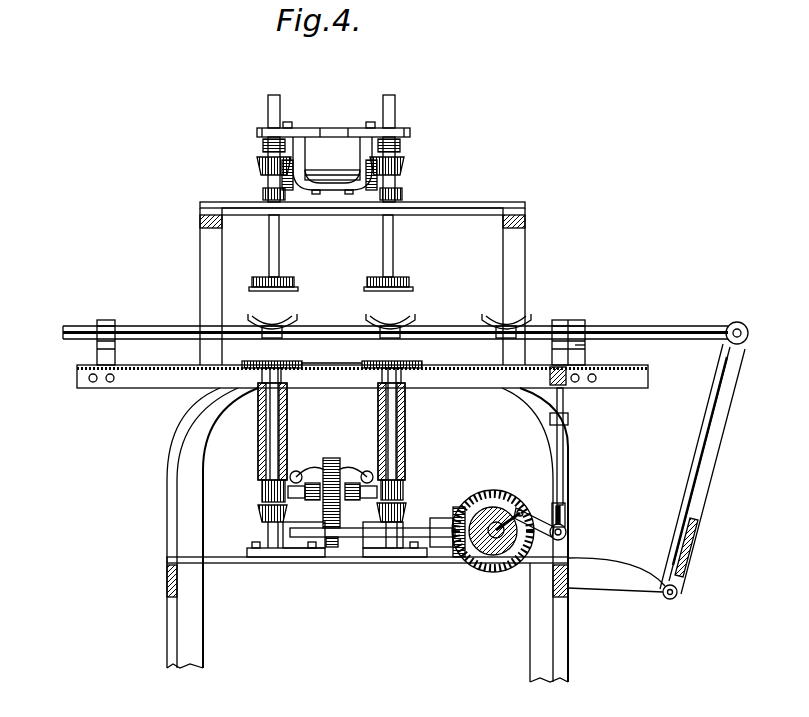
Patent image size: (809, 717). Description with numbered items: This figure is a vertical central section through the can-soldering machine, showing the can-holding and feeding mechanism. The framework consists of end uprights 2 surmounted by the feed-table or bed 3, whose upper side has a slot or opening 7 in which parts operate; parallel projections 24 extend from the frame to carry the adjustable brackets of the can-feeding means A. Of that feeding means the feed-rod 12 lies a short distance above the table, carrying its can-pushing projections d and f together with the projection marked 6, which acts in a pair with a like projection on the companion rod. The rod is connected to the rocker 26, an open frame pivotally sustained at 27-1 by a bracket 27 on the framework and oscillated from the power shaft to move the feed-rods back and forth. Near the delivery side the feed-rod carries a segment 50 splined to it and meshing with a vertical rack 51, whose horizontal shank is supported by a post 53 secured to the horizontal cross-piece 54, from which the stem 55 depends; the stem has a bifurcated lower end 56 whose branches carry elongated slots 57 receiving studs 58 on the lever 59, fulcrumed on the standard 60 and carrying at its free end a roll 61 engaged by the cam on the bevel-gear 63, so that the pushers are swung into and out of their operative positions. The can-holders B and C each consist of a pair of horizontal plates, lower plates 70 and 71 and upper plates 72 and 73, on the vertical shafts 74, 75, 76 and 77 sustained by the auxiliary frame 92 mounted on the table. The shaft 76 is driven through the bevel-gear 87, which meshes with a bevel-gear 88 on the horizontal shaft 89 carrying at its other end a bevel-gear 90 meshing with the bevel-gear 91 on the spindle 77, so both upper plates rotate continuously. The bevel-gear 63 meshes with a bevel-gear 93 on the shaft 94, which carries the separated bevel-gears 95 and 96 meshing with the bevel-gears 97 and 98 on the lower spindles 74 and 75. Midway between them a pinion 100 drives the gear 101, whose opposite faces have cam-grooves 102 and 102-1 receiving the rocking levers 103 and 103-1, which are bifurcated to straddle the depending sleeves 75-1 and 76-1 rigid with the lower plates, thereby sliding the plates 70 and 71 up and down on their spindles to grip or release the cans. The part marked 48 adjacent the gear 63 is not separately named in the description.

The uprights 2 is at (558, 643).
The feed-table 3 is at (175, 386).
The cup 6 is at (262, 318).
The slot or opening 7 is at (455, 380).
The feed-rod 12 is at (637, 325).
The projections 24 is at (93, 383).
The rocker 26 is at (718, 447).
The bracket 27 is at (616, 582).
The pivot 27-1 is at (675, 600).
The eccentric 48 is at (488, 548).
The segments 50 is at (565, 320).
The racks 51 is at (585, 353).
The posts 53 is at (550, 417).
The horizontal cross-piece 54 is at (546, 428).
The stem 55 is at (565, 460).
The bifurcated lower end 56 is at (567, 527).
The elongated slots 57 is at (567, 532).
The studs 58 is at (566, 540).
The lever 59 is at (560, 496).
The standard 60 is at (512, 555).
The roll 61 is at (498, 503).
The bevel-gear 63 is at (488, 492).
The lower plate 70 is at (262, 361).
The lower plate 71 is at (375, 361).
The upper plate 72 is at (282, 291).
The upper plate 73 is at (386, 291).
The shaft 74 is at (284, 430).
The shaft 75 is at (404, 452).
The depending sleeve 75-1 is at (258, 405).
The shaft 76 is at (280, 250).
The depending sleeve 76-1 is at (378, 422).
The shaft 77 is at (393, 250).
The bevel-gear 87 is at (260, 160).
The bevel-gear 88 is at (282, 178).
The horizontal shaft 89 is at (324, 178).
The bevel-gear 90 is at (380, 185).
The bevel-gear 91 is at (400, 165).
The auxiliary frame 92 is at (503, 255).
The bevel-gear 93 is at (458, 514).
The shaft 94 is at (440, 528).
The bevel-gear 95 is at (290, 560).
The bevel-gear 96 is at (378, 560).
The bevel-gear 97 is at (258, 520).
The bevel-gear 98 is at (410, 520).
The pinion 100 is at (333, 560).
The gear 101 is at (332, 458).
The cam-groove 102 is at (312, 500).
The cam-groove 102-1 is at (350, 500).
The rocking lever 103 is at (312, 470).
The rocking lever 103-1 is at (352, 470).
The can-feeding means A is at (131, 332).
The can-holder B is at (301, 347).
The can-holder C is at (419, 347).
The projection d is at (406, 318).
The projection f is at (524, 318).